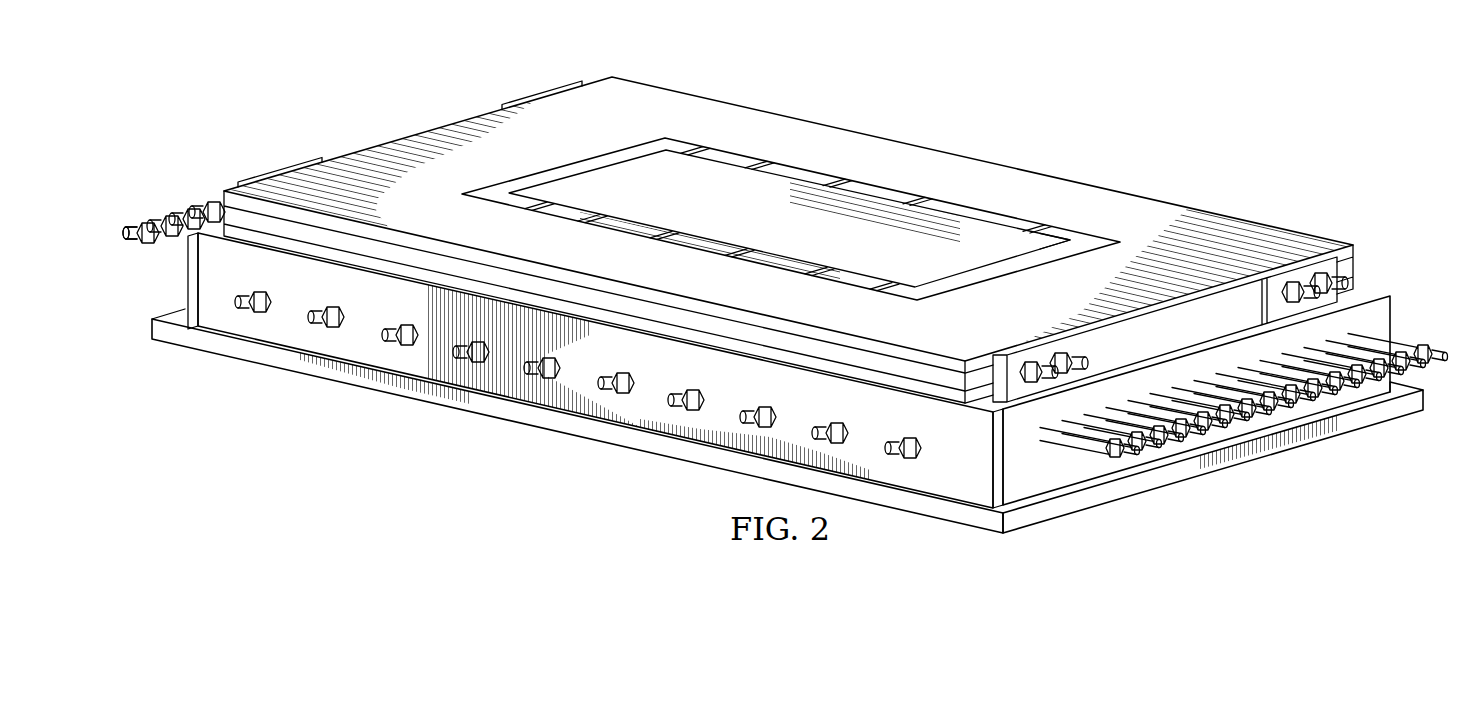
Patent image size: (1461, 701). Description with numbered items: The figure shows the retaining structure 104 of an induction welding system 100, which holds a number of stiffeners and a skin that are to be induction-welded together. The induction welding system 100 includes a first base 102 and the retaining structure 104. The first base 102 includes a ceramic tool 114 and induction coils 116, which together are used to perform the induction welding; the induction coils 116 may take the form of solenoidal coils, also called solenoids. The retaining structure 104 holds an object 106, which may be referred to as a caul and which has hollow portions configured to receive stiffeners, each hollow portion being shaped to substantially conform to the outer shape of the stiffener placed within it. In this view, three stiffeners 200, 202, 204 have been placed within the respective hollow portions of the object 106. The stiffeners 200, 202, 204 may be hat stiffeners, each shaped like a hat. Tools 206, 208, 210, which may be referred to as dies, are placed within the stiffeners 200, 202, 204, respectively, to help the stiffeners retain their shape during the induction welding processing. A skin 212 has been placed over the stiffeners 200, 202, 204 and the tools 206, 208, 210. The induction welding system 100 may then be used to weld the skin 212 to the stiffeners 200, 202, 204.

The induction welding system 100 is at (957, 77).
The first base 102 is at (506, 424).
The retaining structure 104 is at (685, 134).
The object 106 is at (1174, 201).
The ceramic tool 114 is at (645, 413).
The induction coils 116 is at (1380, 341).
The stiffener 200 is at (777, 160).
The stiffener 202 is at (920, 193).
The stiffener 204 is at (1067, 225).
The tool 206 is at (740, 158).
The tool 208 is at (883, 188).
The tool 210 is at (1027, 220).
The skin 212 is at (622, 176).